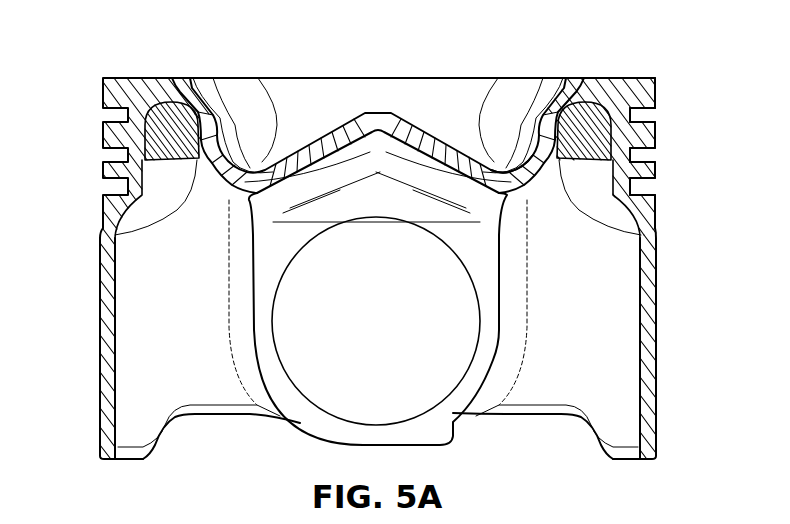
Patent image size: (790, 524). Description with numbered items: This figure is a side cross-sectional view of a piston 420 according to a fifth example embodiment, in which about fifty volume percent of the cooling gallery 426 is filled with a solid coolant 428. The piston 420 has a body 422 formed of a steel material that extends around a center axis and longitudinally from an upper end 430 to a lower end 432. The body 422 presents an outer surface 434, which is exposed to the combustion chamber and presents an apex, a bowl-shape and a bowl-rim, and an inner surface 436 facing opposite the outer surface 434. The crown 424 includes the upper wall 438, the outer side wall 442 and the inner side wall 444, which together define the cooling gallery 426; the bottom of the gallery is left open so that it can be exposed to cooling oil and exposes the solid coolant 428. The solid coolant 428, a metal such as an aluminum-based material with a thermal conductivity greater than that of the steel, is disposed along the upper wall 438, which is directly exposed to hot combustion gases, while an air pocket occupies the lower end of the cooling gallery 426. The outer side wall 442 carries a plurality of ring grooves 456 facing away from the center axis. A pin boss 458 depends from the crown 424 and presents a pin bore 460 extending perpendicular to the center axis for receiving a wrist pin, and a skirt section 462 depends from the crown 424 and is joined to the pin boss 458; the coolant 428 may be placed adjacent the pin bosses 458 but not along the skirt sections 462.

The piston 420 is at (541, 72).
The body 422 is at (98, 371).
The crown 424 is at (655, 77).
The cooling gallery 426 is at (172, 108).
The solid coolant 428 is at (148, 150).
The upper end 430 is at (588, 76).
The lower end 432 is at (650, 463).
The outer surface 434 is at (318, 136).
The inner surface 436 is at (448, 156).
The upper wall 438 is at (168, 85).
The outer side wall 442 is at (657, 184).
The inner side wall 444 is at (532, 165).
The ring grooves 456 is at (657, 149).
The pin boss 458 is at (545, 390).
The pin bore 460 is at (430, 409).
The skirt section 462 is at (647, 325).